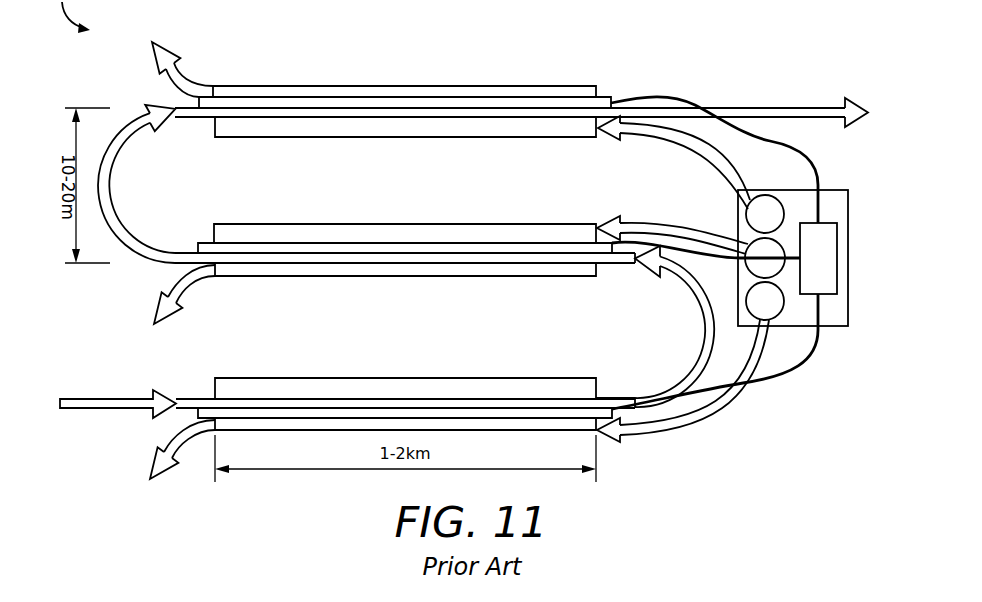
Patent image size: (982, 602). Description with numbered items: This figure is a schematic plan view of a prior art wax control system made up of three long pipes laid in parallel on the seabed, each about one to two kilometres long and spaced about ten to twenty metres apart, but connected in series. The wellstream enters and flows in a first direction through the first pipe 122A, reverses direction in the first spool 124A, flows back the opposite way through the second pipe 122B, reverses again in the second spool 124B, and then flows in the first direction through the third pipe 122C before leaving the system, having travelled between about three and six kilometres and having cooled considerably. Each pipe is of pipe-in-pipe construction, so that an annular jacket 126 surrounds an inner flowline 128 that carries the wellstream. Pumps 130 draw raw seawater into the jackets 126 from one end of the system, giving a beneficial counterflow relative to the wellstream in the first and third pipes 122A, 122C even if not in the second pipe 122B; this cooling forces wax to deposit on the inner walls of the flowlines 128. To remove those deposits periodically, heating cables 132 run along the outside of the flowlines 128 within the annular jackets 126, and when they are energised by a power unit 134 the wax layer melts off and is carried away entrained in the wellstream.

The first pipe 122A is at (193, 402).
The second pipe 122B is at (262, 258).
The third pipe 122C is at (262, 114).
The first spool 124A is at (688, 378).
The second spool 124B is at (133, 122).
The annular jacket 126 is at (412, 92).
The flowline 128 is at (557, 114).
The pump 130 is at (748, 214).
The heating cable 132 is at (486, 104).
The power unit 134 is at (837, 256).